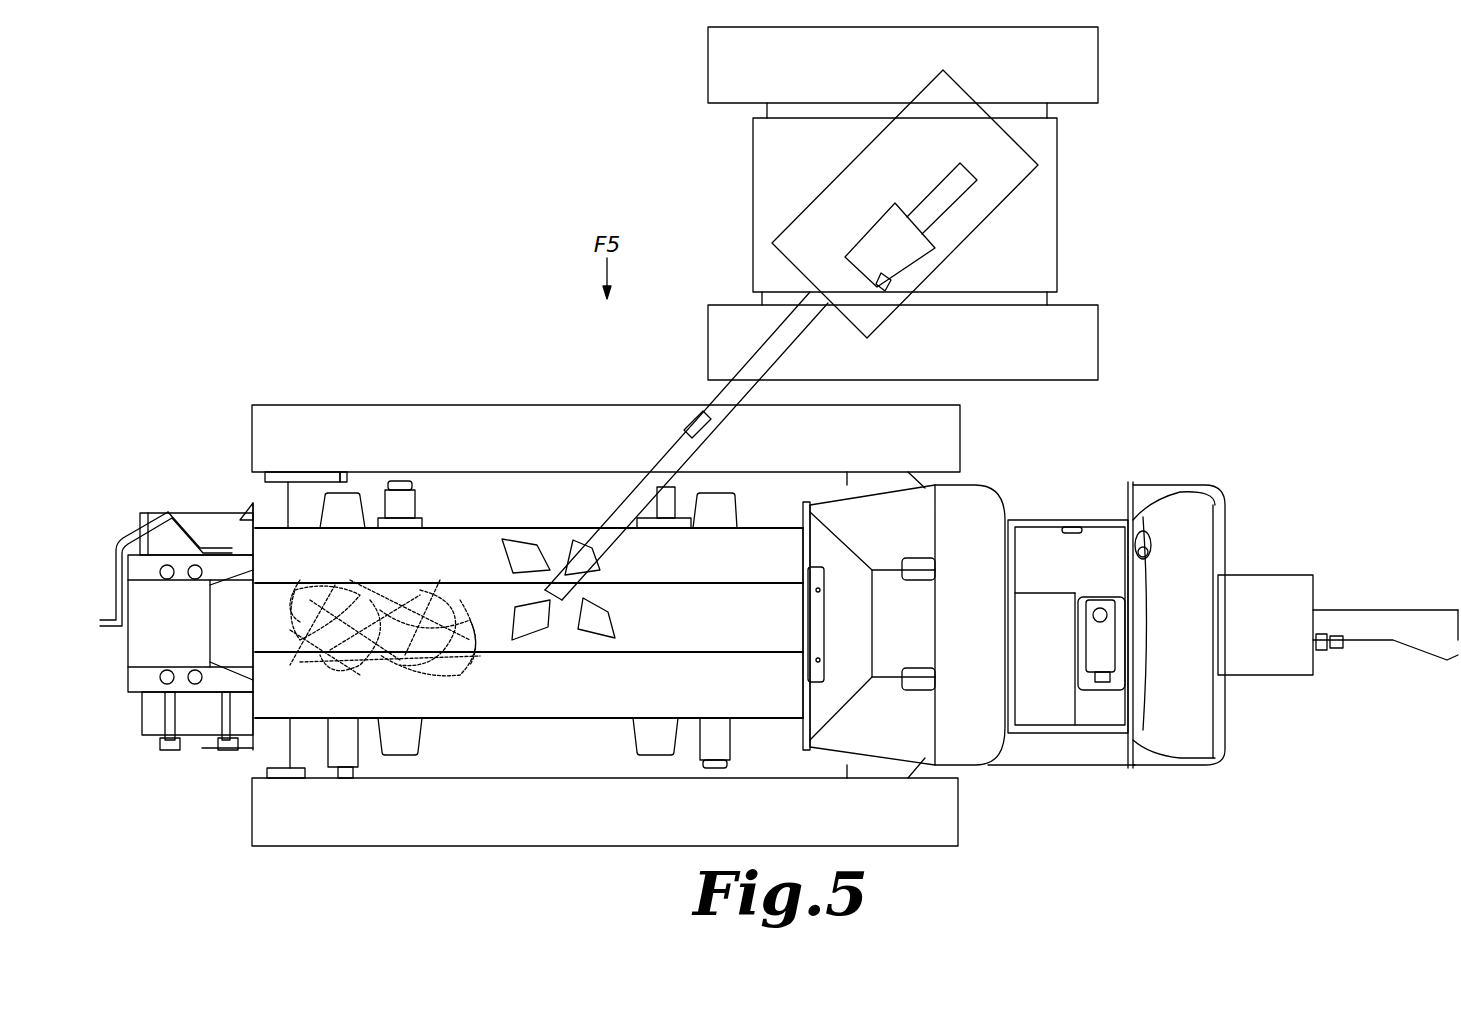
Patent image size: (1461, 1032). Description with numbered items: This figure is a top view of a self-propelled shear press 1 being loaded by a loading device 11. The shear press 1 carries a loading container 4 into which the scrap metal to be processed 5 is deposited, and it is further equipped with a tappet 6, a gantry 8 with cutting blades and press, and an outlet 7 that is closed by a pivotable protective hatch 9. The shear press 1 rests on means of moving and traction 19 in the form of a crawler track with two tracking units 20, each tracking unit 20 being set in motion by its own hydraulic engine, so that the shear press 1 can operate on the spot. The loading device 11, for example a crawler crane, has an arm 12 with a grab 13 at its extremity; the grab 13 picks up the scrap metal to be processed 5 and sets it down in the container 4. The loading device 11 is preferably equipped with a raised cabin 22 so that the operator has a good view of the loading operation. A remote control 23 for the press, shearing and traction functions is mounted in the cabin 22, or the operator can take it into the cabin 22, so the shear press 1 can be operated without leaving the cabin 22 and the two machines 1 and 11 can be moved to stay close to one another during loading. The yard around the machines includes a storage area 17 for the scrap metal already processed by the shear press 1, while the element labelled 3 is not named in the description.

The shear press 1 is at (333, 242).
The power unit 3 is at (1143, 770).
The loading container 4 is at (482, 545).
The scrap metal to be processed 5 is at (445, 610).
The tappet 6 is at (1367, 625).
The outlet 7 is at (143, 530).
The gantry 8 is at (208, 527).
The pivotable protective hatch 9 is at (150, 517).
The loading device 11 is at (1095, 208).
The arm 12 is at (637, 502).
The grab 13 is at (527, 562).
The storage area 17 is at (280, 772).
The means of moving and traction 19 is at (996, 435).
The tracking unit 20 is at (940, 847).
The raised cabin 22 is at (906, 248).
The remote control 23 is at (888, 288).